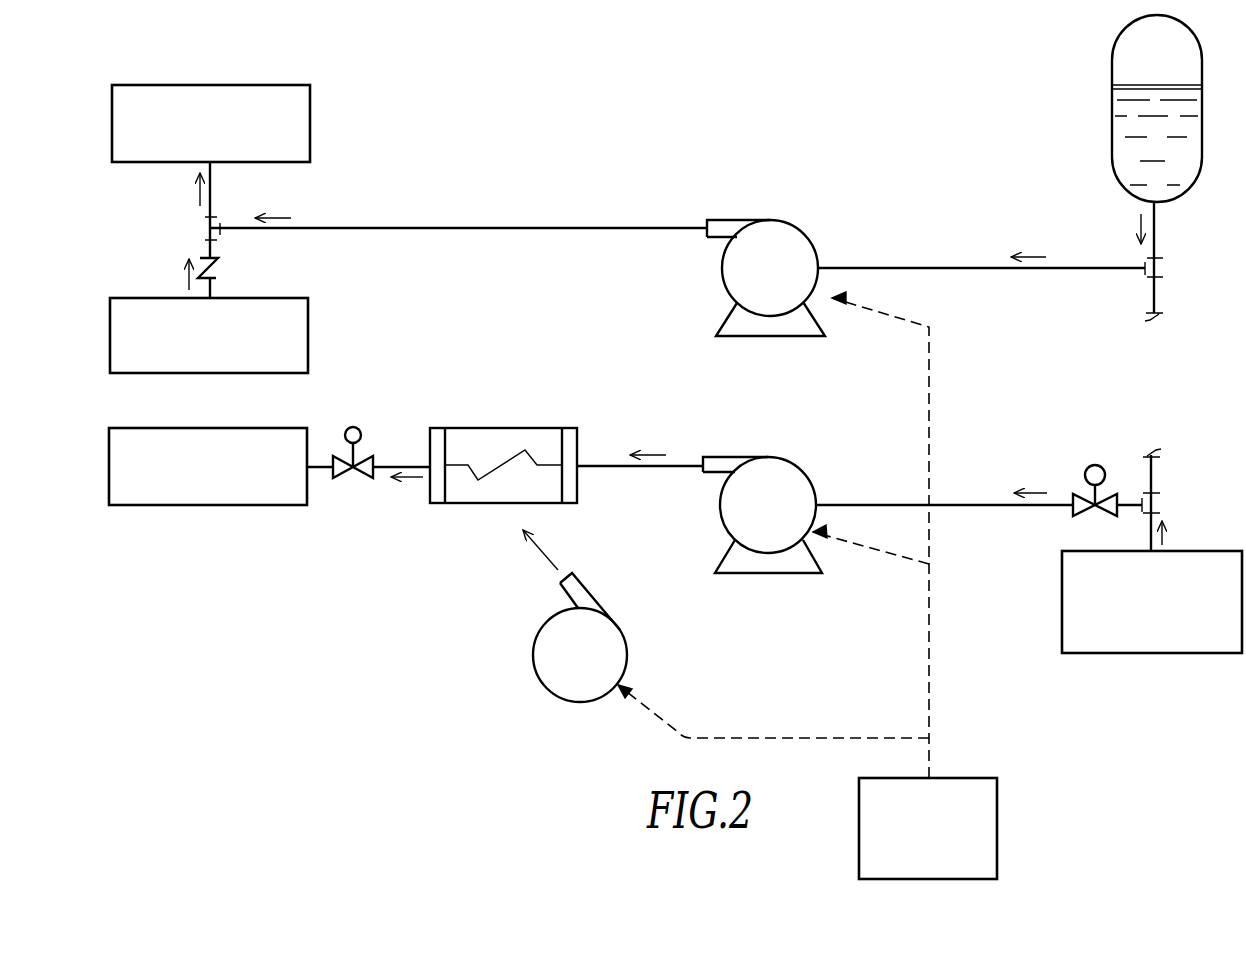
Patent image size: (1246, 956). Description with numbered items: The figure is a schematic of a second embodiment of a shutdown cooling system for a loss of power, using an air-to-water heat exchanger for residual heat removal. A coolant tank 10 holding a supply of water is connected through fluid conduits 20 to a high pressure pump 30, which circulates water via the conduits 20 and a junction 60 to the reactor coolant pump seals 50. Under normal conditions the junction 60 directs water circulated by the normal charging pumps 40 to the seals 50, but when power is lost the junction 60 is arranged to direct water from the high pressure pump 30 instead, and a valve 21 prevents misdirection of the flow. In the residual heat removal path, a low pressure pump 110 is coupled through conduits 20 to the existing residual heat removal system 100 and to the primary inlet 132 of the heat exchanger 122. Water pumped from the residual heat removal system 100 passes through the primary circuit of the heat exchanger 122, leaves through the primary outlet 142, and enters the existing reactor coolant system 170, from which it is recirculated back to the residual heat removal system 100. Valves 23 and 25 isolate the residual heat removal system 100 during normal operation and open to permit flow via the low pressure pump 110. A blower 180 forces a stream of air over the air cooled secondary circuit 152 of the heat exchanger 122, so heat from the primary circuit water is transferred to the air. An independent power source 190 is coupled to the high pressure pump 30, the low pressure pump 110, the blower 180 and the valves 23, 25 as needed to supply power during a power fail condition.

The coolant tank 10 is at (1126, 31).
The fluid conduits 20 is at (1156, 232).
The valve 21 is at (221, 270).
The valve 23 is at (338, 472).
The valve 25 is at (1076, 512).
The high pressure pump 30 is at (779, 220).
The normal charging pumps 40 is at (309, 340).
The reactor coolant pump seals 50 is at (312, 131).
The junction 60 is at (199, 229).
The existing residual heat removal system 100 is at (1205, 551).
The low pressure pump 110 is at (783, 457).
The heat exchanger 122 is at (585, 490).
The primary inlet 132 is at (587, 456).
The primary outlet 142 is at (420, 447).
The air cooled secondary circuit 152 is at (453, 512).
The existing reactor coolant system 170 is at (190, 506).
The blower 180 is at (533, 636).
The independent power source 190 is at (998, 853).